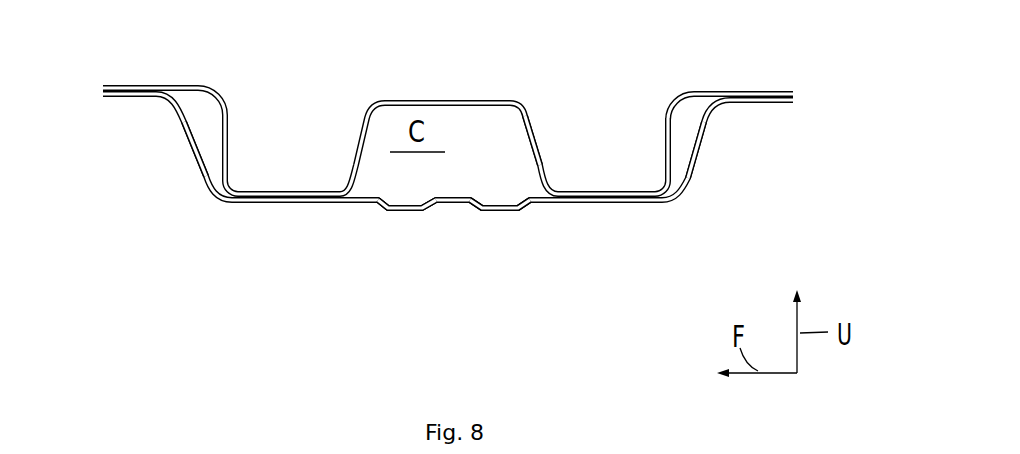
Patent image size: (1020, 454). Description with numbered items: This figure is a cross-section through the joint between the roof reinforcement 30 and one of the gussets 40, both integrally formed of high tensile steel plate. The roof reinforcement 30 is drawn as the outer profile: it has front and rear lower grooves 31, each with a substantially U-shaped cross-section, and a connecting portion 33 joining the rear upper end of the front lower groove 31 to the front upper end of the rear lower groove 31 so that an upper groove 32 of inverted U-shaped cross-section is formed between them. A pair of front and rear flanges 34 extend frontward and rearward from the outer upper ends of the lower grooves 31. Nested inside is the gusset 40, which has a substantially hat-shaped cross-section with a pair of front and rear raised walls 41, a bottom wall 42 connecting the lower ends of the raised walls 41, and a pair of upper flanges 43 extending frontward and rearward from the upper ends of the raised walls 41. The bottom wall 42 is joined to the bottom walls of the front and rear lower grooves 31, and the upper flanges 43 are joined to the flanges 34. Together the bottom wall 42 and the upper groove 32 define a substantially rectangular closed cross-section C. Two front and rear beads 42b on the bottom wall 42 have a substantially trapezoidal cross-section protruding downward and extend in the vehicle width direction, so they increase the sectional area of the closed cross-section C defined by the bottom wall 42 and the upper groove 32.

The roof reinforcement 30 is at (510, 90).
The lower groove 31 is at (230, 152).
The upper groove 32 is at (526, 152).
The connecting portion 33 is at (459, 100).
The flange 34 is at (160, 85).
The gusset 40 is at (216, 210).
The raised wall 41 is at (193, 145).
The bottom wall 42 is at (538, 210).
The bead 42b is at (498, 212).
The upper flange 43 is at (118, 97).